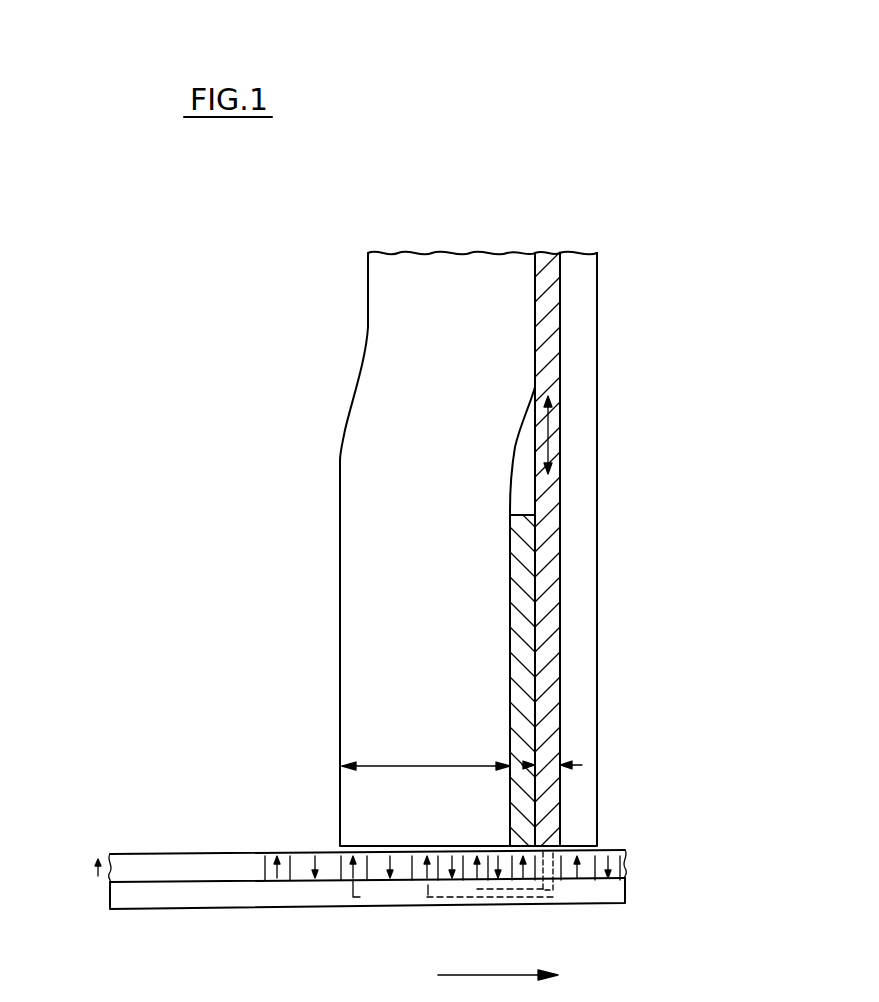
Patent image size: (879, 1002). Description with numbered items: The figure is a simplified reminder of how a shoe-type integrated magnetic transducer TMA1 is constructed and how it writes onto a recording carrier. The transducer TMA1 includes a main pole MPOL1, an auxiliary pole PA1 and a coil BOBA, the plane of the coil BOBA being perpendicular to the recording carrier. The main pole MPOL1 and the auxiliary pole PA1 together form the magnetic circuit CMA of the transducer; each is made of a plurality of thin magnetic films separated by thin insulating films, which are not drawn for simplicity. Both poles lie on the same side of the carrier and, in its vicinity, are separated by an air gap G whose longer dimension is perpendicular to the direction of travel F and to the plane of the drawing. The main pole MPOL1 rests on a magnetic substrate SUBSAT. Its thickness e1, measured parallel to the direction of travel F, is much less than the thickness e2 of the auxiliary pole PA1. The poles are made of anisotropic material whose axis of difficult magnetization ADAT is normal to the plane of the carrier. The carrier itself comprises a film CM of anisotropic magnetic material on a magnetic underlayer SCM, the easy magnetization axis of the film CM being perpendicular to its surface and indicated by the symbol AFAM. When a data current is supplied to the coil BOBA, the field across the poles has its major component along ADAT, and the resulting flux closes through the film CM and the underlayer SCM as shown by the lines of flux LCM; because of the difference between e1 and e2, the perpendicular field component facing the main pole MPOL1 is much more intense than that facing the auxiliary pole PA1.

The magnetic transducer of the shoe type TMA1 is at (370, 386).
The auxiliary pole PA1 is at (477, 335).
The magnetic circuit CMA is at (550, 253).
The main pole MPOL1 is at (548, 291).
The coil BOBA is at (527, 612).
The axis of difficult magnetization ADAT is at (550, 444).
The magnetic substrate SUBSAT is at (578, 698).
The thickness of the main pole e1 is at (552, 756).
The thickness of the auxiliary pole e2 is at (426, 758).
The air gap G is at (527, 838).
The film of anisotropic magnetic material CM is at (627, 857).
The magnetic underlayer SCM is at (115, 897).
The lines of flux LCM is at (555, 863).
The axis of easy magnetization AFAM is at (64, 869).
The direction of travel F is at (498, 965).